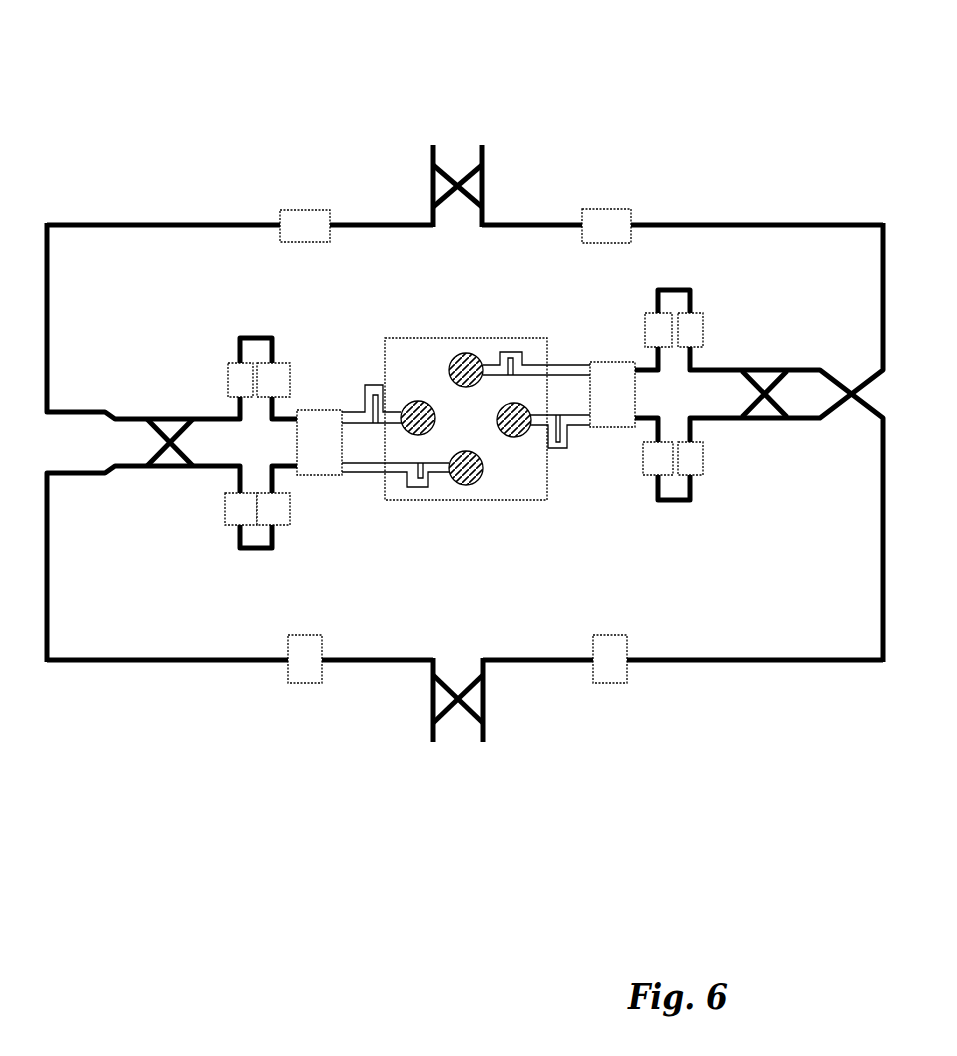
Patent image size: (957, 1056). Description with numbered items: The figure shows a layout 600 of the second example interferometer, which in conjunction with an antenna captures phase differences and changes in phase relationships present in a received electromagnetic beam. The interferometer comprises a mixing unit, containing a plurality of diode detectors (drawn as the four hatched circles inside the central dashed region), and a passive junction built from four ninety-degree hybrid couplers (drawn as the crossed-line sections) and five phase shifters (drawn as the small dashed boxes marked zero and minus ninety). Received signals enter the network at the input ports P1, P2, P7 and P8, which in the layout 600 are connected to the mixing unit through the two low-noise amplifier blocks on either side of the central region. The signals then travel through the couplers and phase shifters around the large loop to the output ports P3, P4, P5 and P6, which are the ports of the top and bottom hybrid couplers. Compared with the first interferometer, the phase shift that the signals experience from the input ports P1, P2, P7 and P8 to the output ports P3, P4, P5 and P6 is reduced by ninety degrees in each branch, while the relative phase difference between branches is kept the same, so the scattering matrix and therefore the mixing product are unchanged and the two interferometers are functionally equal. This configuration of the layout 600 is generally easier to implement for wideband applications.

The layout 600 is at (728, 51).
The input port P1 is at (372, 404).
The input port P2 is at (562, 432).
The output port P3 is at (444, 173).
The output port P4 is at (471, 173).
The output port P5 is at (445, 713).
The output port P6 is at (471, 713).
The input port P7 is at (538, 355).
The input port P8 is at (395, 482).